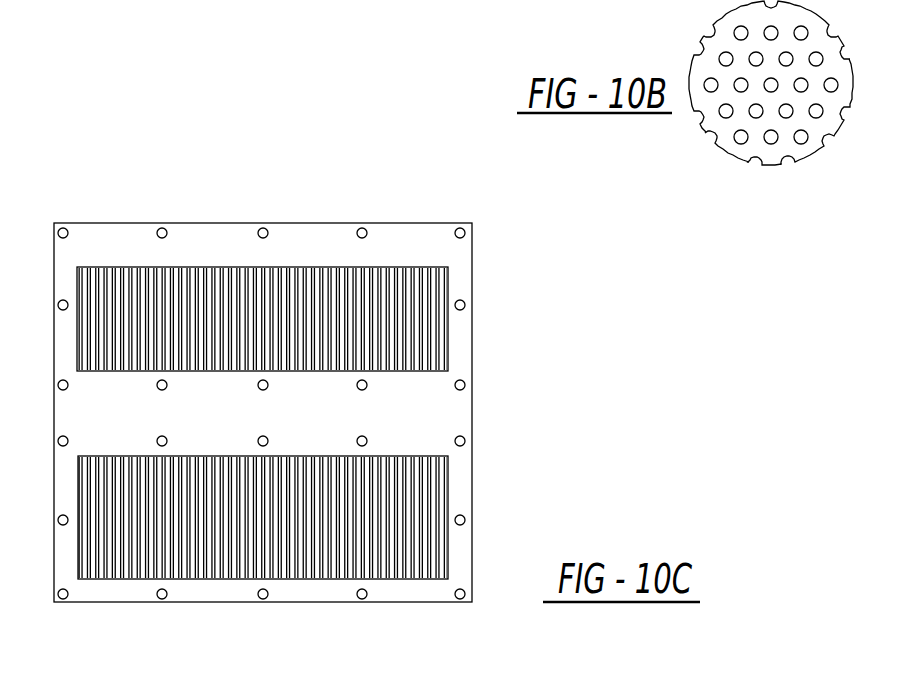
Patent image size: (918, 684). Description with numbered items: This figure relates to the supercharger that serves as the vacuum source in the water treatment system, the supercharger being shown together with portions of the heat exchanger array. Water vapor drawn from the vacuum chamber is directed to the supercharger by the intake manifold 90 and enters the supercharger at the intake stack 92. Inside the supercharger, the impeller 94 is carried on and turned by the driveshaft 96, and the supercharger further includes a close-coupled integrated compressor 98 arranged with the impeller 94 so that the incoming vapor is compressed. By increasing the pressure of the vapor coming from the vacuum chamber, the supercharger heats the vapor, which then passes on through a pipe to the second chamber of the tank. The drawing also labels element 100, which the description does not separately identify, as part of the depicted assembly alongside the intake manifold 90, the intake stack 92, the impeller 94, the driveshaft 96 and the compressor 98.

In FIG. 10C, the intake manifold 90 is at (325, 364).
In FIG. 10C, the intake stack 92 is at (460, 378).
In FIG. 10C, the impeller 94 is at (435, 503).
In FIG. 10C, the driveshaft 96 is at (432, 302).
In FIG. 10B, the close-coupled integrated compressor 98 is at (736, 142).
In FIG. 10C, the close-coupled integrated compressor 98 is at (448, 463).
In FIG. 10B, the perforation hole 100 is at (772, 85).